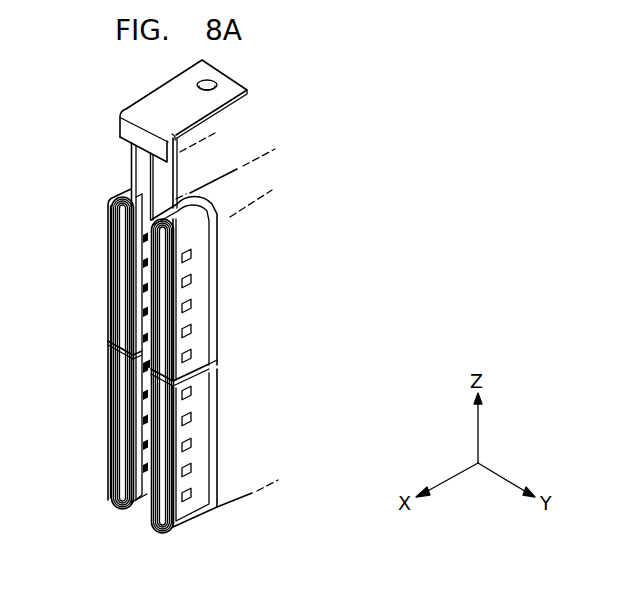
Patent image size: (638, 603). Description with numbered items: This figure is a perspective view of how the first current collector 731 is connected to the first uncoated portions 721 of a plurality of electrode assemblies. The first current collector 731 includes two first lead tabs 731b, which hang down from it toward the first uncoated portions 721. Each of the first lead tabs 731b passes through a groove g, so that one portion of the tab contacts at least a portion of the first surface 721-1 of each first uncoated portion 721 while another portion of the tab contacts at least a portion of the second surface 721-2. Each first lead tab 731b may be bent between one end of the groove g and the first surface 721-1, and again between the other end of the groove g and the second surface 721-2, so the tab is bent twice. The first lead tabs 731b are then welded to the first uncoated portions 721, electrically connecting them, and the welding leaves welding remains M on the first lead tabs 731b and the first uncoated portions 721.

The first current collector 731 is at (157, 90).
The first lead tabs 731b is at (131, 176).
The first uncoated portions 721 is at (162, 298).
The second surface 721-2 is at (111, 325).
The first surface 721-1 is at (136, 467).
The groove g is at (120, 361).
The welding remains M is at (190, 255).